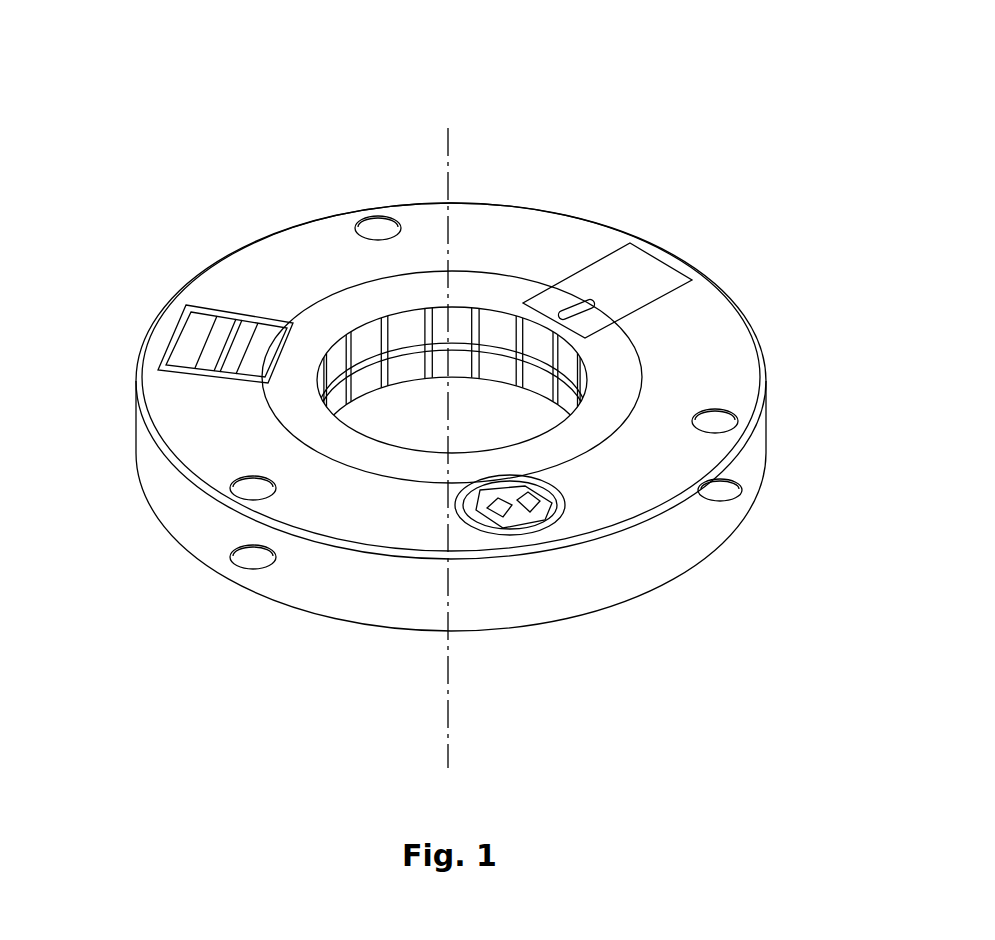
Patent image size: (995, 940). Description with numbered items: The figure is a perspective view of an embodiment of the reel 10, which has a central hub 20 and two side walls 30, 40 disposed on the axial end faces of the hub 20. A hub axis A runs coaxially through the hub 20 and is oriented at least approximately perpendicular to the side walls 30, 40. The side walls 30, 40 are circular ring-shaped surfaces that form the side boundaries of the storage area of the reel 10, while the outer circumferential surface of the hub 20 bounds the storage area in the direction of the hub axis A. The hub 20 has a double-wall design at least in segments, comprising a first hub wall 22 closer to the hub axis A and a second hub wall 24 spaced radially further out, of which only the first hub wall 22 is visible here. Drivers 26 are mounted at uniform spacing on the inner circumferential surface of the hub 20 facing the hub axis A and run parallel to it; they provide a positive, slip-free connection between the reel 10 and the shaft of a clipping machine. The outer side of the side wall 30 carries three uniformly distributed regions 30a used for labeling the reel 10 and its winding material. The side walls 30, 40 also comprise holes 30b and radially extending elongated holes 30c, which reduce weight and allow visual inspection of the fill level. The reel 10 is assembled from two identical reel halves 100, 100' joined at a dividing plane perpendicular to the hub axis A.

The reel 10 is at (742, 138).
The hub 20 is at (292, 110).
The first hub wall 22 is at (408, 320).
The second hub wall 24 is at (297, 208).
The drivers 26 is at (312, 340).
The side wall 30 is at (760, 330).
The regions 30a is at (186, 360).
The holes 30b is at (381, 226).
The elongated holes 30c is at (594, 304).
The side wall 40 is at (728, 542).
The reel half 100 is at (453, 354).
The reel half 100' is at (440, 527).
The hub axis A is at (450, 155).